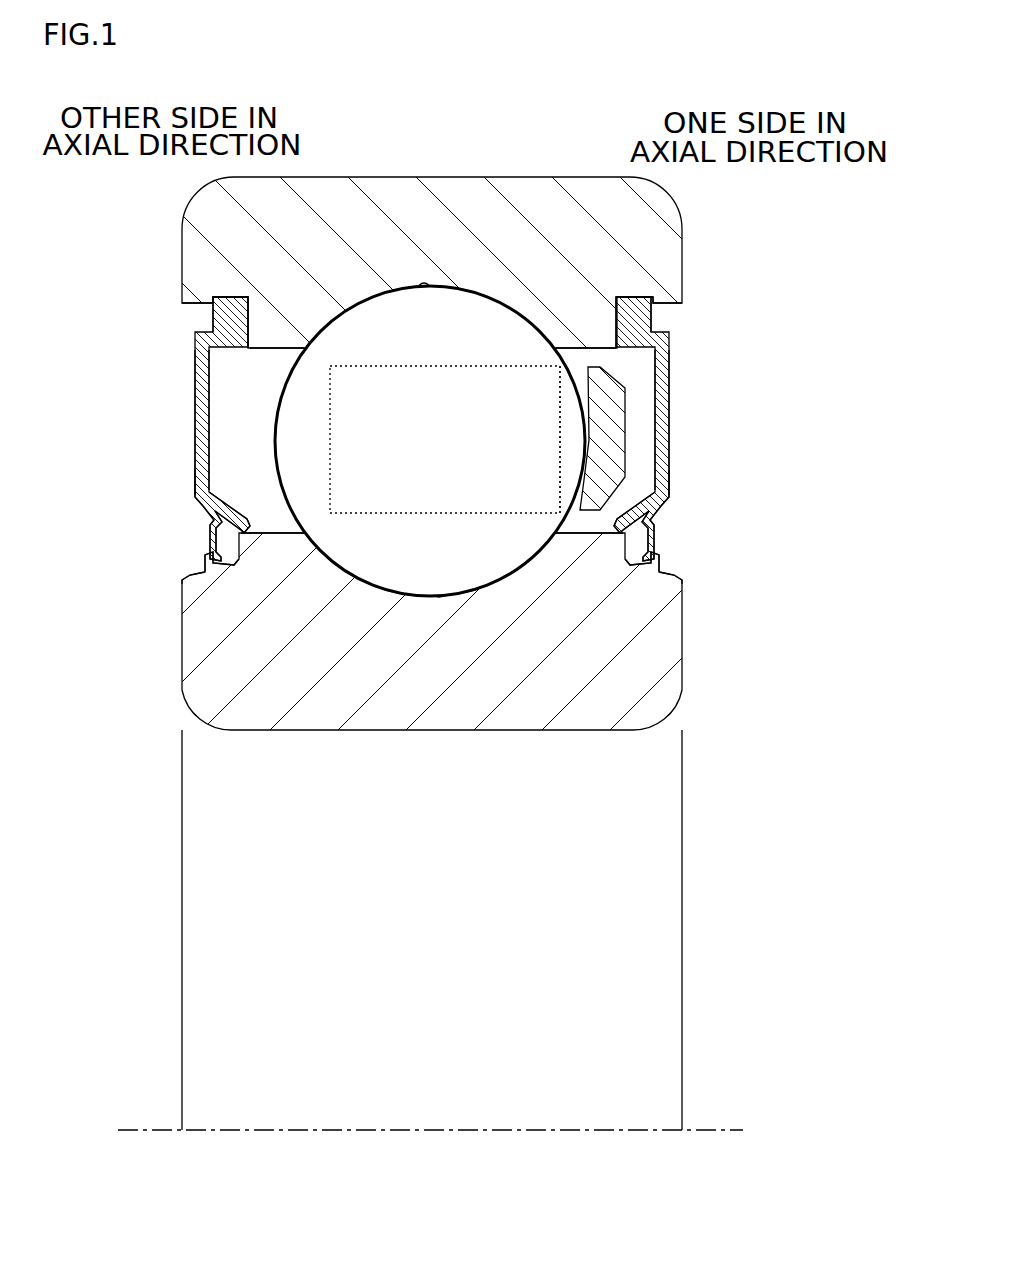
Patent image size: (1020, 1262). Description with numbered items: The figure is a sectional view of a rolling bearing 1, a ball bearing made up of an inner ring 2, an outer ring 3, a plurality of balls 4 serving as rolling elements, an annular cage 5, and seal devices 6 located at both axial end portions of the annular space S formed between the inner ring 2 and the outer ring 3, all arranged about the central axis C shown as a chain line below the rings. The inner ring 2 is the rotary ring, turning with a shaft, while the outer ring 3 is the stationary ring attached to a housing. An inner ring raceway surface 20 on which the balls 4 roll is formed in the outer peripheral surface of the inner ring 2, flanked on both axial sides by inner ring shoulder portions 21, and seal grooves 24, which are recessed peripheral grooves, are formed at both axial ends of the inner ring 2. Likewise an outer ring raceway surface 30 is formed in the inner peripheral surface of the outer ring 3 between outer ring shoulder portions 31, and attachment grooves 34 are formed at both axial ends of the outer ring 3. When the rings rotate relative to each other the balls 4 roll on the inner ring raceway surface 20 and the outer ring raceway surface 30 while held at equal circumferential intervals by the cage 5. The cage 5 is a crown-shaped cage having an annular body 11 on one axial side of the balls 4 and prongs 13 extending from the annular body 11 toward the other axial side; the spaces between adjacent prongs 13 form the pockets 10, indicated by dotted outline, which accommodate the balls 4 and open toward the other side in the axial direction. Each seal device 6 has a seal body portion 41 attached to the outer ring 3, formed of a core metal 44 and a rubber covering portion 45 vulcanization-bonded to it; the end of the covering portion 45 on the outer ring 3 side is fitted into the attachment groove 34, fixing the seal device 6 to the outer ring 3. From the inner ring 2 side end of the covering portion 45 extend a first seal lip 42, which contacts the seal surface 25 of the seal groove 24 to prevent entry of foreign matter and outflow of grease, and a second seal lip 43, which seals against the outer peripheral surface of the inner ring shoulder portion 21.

The rolling bearing 1 is at (576, 176).
The inner ring 2 is at (263, 690).
The outer ring 3 is at (207, 210).
The ball 4 is at (470, 307).
The cage 5 is at (599, 431).
The seal device 6 is at (195, 409).
The pocket 10 is at (385, 516).
The annular body 11 is at (608, 443).
The prong 13 is at (465, 515).
The inner ring raceway surface 20 is at (438, 597).
The inner ring shoulder portion 21 is at (277, 556).
The seal groove 24 is at (198, 551).
The seal surface 25 is at (181, 573).
The outer ring raceway surface 30 is at (424, 283).
The outer ring shoulder portion 31 is at (270, 335).
The attachment groove 34 is at (205, 312).
The seal body portion 41 is at (194, 388).
The first seal lip 42 is at (210, 528).
The second seal lip 43 is at (247, 524).
The core metal 44 is at (206, 445).
The covering portion 45 is at (193, 472).
The annular space S is at (243, 384).
The central axis C is at (528, 1130).